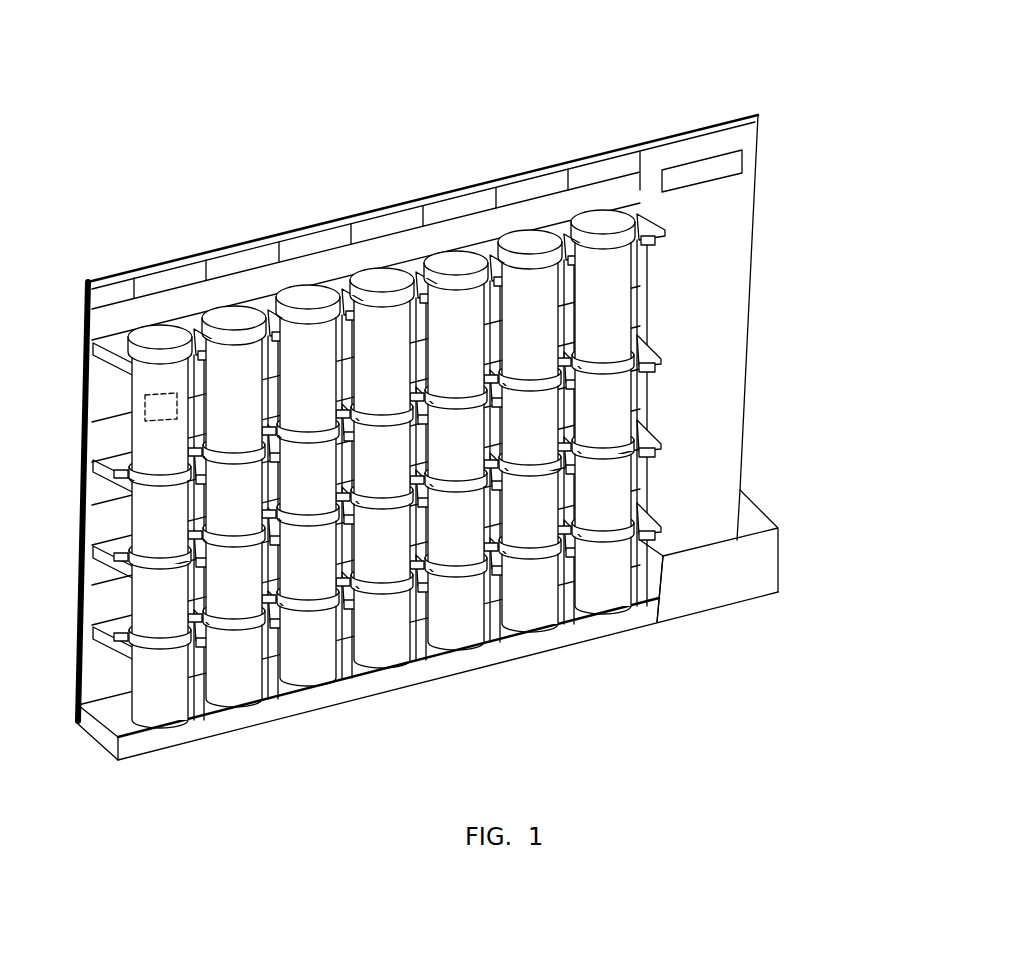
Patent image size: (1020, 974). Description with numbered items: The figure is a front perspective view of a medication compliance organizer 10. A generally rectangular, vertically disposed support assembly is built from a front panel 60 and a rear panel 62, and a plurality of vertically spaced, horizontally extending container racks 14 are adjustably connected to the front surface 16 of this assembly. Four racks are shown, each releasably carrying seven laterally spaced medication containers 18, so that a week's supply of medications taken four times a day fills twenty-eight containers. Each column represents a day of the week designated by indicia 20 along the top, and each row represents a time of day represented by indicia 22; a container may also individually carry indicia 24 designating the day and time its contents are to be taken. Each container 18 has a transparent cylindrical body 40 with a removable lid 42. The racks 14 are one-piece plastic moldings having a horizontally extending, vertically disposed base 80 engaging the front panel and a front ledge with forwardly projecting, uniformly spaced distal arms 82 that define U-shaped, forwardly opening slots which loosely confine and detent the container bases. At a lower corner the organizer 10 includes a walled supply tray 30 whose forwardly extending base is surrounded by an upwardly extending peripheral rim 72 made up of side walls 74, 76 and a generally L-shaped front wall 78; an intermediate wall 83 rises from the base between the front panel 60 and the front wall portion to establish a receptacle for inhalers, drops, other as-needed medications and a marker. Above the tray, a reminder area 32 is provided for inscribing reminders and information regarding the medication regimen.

The organizer 10 is at (427, 431).
The container rack 14 is at (108, 357).
The front surface 16 is at (450, 431).
The medication container 18 is at (363, 469).
The indicia 20 is at (366, 246).
The indicia 22 is at (240, 287).
The indicia 24 is at (150, 415).
The supply tray 30 is at (406, 690).
The reminder area 32 is at (682, 211).
The cylindrical body 40 is at (618, 393).
The lid 42 is at (612, 368).
The front panel 60 is at (416, 431).
The rear panel 62 is at (640, 140).
The peripheral rim 72 is at (488, 672).
The side wall 74 is at (88, 733).
The side wall 76 is at (745, 525).
The front wall 78 is at (543, 633).
The base 80 is at (622, 190).
The distal arm 82 is at (645, 450).
The intermediate wall 83 is at (647, 582).